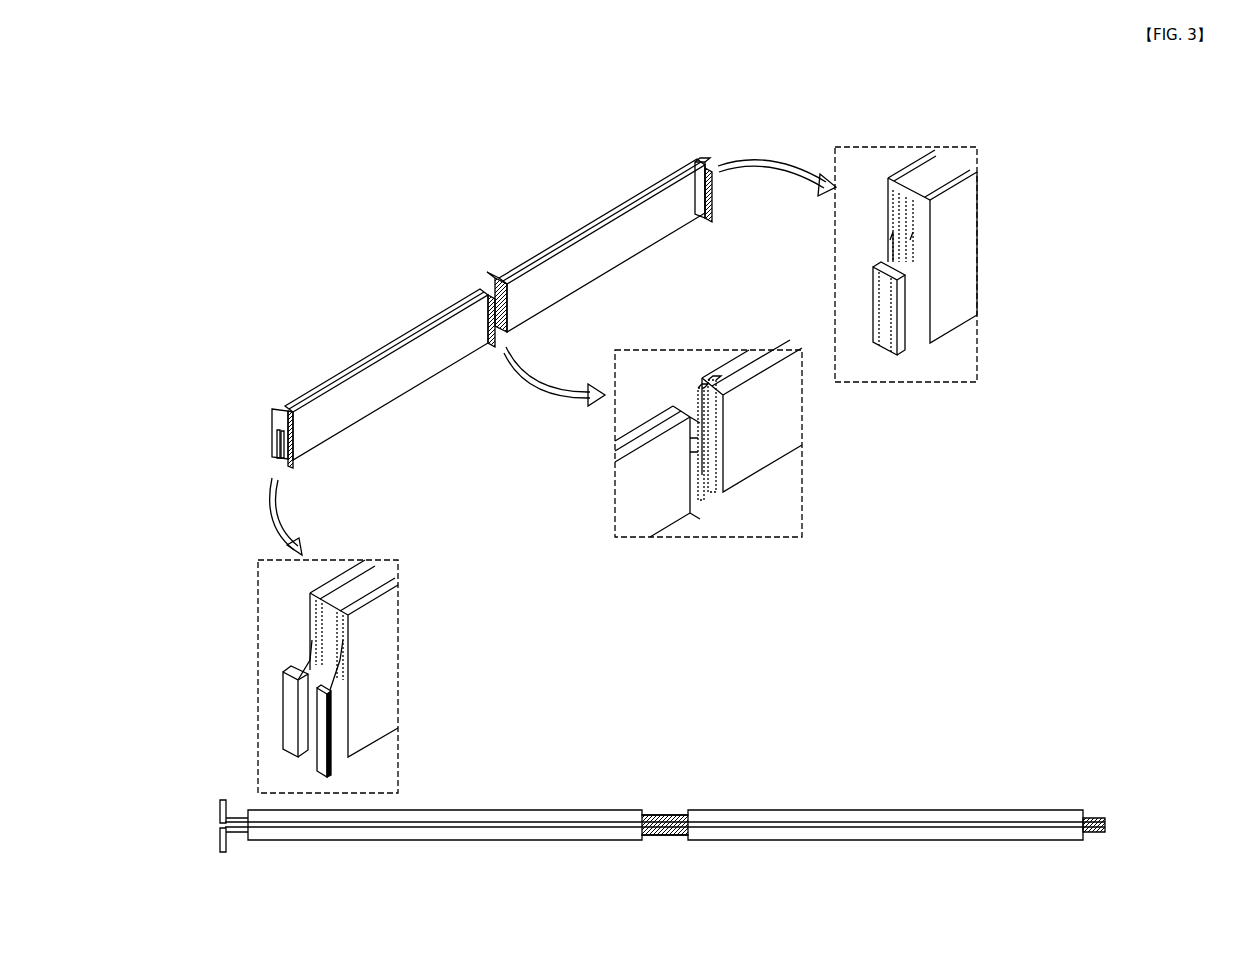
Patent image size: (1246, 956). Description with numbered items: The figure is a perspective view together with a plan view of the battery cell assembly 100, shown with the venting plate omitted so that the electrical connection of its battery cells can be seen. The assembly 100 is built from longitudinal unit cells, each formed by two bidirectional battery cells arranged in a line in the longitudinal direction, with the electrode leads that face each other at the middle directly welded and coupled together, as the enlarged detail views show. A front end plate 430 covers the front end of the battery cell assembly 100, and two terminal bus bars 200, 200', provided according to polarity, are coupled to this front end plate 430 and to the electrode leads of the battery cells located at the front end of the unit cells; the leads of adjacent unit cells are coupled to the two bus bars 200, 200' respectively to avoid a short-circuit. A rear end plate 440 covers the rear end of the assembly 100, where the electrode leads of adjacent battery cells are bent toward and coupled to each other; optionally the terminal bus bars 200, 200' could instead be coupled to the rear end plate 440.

The battery cell assembly 100 is at (330, 203).
The terminal bus bar 200 is at (249, 441).
The terminal bus bar 200' is at (245, 450).
The front end plate 430 is at (270, 412).
The rear end plate 440 is at (702, 160).